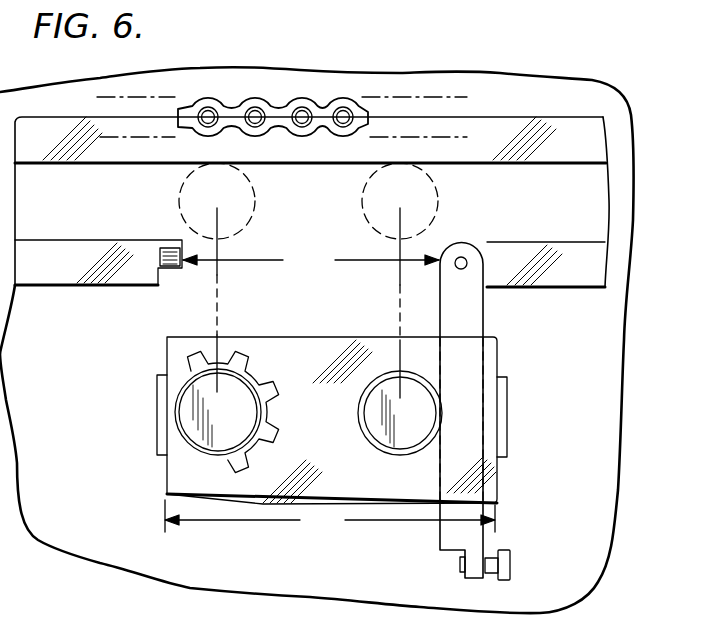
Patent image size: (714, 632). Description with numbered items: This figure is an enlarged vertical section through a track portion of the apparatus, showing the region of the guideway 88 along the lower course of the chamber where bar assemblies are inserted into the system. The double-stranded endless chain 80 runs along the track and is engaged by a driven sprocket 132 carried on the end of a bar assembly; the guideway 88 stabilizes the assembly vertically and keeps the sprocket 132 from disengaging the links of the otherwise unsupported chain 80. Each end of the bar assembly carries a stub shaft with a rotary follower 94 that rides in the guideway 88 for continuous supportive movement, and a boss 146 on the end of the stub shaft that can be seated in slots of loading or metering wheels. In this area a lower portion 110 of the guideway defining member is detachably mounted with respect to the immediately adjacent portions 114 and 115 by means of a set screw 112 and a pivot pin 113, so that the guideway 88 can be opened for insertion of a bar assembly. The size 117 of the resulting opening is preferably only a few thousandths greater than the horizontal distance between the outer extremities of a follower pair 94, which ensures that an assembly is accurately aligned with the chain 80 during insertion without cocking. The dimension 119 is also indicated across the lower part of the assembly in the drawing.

The endless chain 80 is at (325, 100).
The guideway 88 is at (78, 213).
The adjacent portion of guideway defining member 114 is at (112, 275).
The size of the opening 117 is at (311, 262).
The pivot pin 113 is at (462, 256).
The adjacent portion of guideway defining member 115 is at (542, 280).
The lower portion of the guideway defining member 110 is at (488, 322).
The driven sprocket 132 is at (283, 440).
The boss 146 is at (372, 438).
The rotary follower 94 is at (415, 453).
The spacing distance 119 is at (330, 517).
The set screw 112 is at (510, 552).